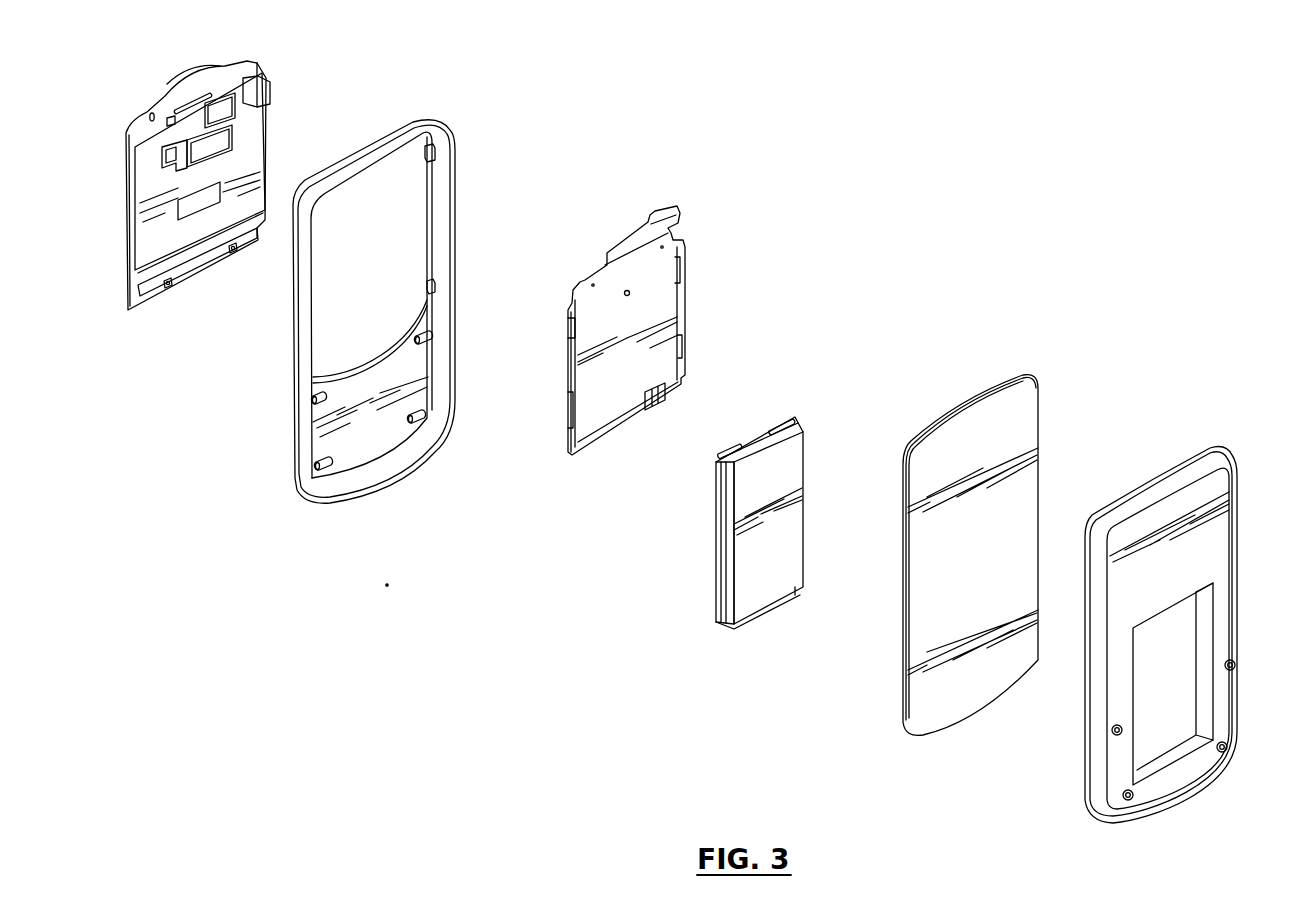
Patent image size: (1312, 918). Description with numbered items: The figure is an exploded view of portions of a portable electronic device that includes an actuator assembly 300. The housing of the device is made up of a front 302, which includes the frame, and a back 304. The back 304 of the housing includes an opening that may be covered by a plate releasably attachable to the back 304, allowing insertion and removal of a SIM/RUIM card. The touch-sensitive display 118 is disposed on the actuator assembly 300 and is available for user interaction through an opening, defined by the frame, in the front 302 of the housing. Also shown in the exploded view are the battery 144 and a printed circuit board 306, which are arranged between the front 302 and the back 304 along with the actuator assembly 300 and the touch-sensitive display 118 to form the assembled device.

The touch-sensitive display 118 is at (253, 132).
The front 302 is at (433, 122).
The actuator assembly 300 is at (660, 285).
The battery 144 is at (798, 483).
The printed circuit board 306 is at (1028, 408).
The back 304 is at (1223, 485).